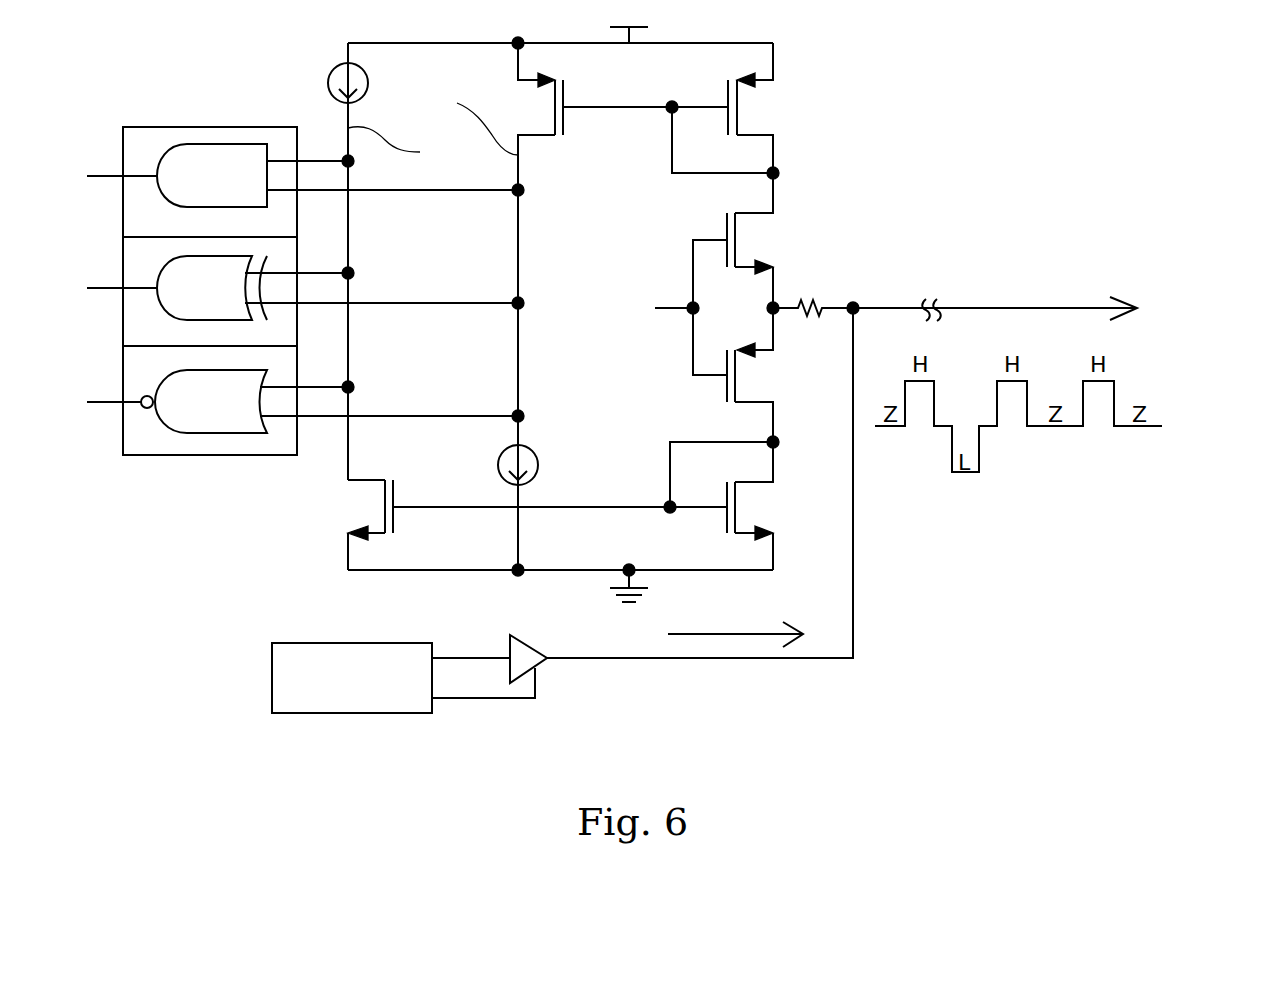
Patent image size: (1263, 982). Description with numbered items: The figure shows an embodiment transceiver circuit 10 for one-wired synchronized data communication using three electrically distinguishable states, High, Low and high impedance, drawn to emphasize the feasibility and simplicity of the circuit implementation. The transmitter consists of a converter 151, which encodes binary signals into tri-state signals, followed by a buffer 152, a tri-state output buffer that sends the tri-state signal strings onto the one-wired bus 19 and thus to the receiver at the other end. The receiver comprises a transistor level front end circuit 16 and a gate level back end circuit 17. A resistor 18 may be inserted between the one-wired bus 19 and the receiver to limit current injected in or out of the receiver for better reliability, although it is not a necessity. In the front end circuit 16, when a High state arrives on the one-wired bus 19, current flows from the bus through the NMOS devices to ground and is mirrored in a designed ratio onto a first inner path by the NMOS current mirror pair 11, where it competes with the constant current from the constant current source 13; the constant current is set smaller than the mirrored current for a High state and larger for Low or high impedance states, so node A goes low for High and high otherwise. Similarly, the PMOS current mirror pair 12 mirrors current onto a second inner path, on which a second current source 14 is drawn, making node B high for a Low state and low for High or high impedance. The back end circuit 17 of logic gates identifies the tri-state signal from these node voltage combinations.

The transceiver circuit 10 is at (1102, 106).
The NMOS current mirror pair 11 is at (619, 474).
The PMOS current mirror pair 12 is at (636, 153).
The constant current source 13 is at (328, 83).
The current source 14 is at (498, 465).
The front end circuit 16 is at (835, 252).
The back end circuit 17 is at (208, 457).
The resistor 18 is at (812, 322).
The one-wired bus 19 is at (900, 308).
The converter 151 is at (272, 678).
The buffer 152 is at (543, 663).